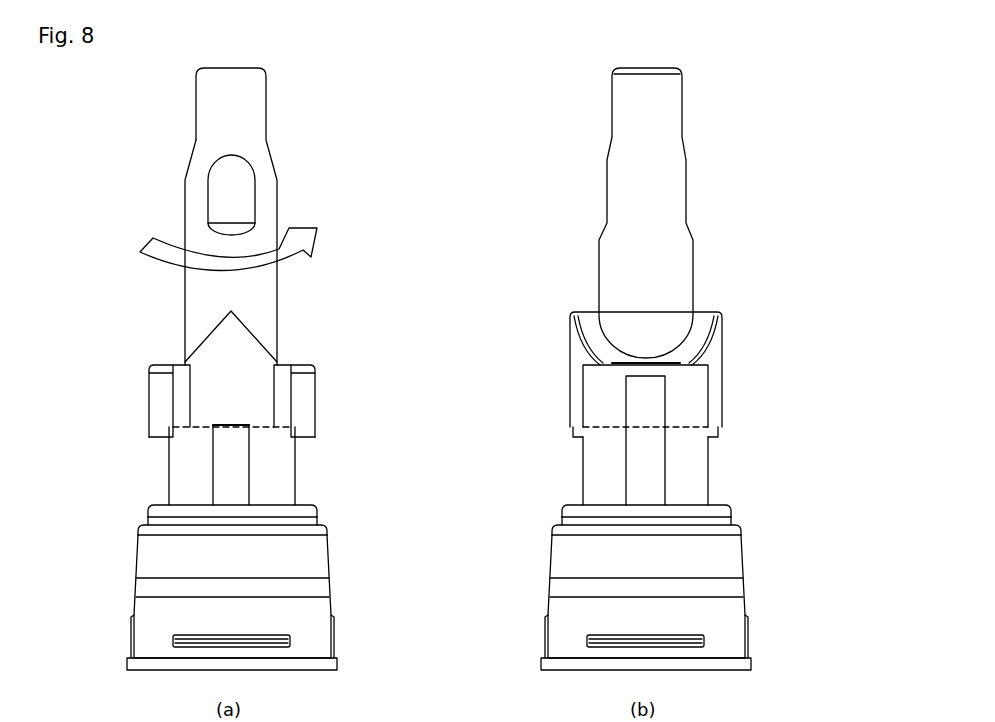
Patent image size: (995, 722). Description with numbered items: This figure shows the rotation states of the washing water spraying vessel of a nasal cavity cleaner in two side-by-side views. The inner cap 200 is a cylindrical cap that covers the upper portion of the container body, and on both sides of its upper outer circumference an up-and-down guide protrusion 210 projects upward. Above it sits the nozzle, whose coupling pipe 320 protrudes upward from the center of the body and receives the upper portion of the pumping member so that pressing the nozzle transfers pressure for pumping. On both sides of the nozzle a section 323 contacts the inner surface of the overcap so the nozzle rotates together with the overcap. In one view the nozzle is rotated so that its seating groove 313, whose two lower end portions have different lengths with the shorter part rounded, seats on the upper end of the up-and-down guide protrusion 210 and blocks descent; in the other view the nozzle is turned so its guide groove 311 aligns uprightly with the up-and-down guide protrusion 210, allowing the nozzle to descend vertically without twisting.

The inner cap 200 is at (269, 566).
The up-and-down guide protrusion 210 is at (231, 474).
The guide groove 311 is at (646, 378).
The seating groove 313 is at (235, 417).
The coupling pipe 320 is at (197, 233).
The section 323 is at (236, 196).